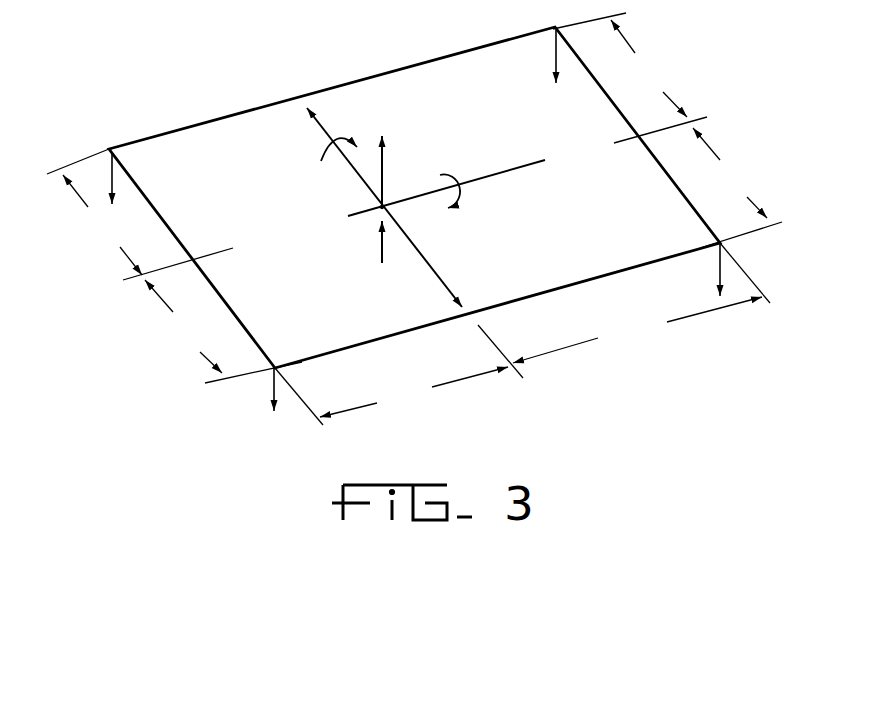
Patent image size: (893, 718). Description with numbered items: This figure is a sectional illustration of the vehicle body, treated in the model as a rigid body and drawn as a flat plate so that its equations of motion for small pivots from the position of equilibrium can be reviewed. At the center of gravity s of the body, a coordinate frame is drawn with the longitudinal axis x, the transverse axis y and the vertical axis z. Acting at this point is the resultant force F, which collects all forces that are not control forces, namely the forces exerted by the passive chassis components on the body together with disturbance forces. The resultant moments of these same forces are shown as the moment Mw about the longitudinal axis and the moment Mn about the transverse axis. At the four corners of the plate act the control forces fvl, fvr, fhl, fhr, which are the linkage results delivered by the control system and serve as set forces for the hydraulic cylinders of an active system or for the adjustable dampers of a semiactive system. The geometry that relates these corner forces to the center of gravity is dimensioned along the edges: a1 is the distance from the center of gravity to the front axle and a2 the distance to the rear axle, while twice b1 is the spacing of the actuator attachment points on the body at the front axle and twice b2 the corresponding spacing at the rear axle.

The x axis (longitudinal) x is at (447, 188).
The y axis (lateral) y is at (374, 206).
The z axis (vertical) z is at (381, 159).
The center of gravity / reference point s is at (390, 194).
The resultant force F is at (372, 247).
The resultant moment about the transverse axis Mn is at (334, 165).
The resultant moment about the longitudinal axis Mw is at (459, 208).
The front left control force fvl is at (551, 71).
The front right control force fvr is at (700, 271).
The rear left control force fhl is at (135, 178).
The rear right control force fhr is at (272, 403).
The distance to the front axle a1 is at (641, 303).
The distance to the rear axle a2 is at (399, 375).
The half spacing of front actuator attachment points b1 is at (667, 130).
The half spacing of rear actuator attachment points b2 is at (174, 266).